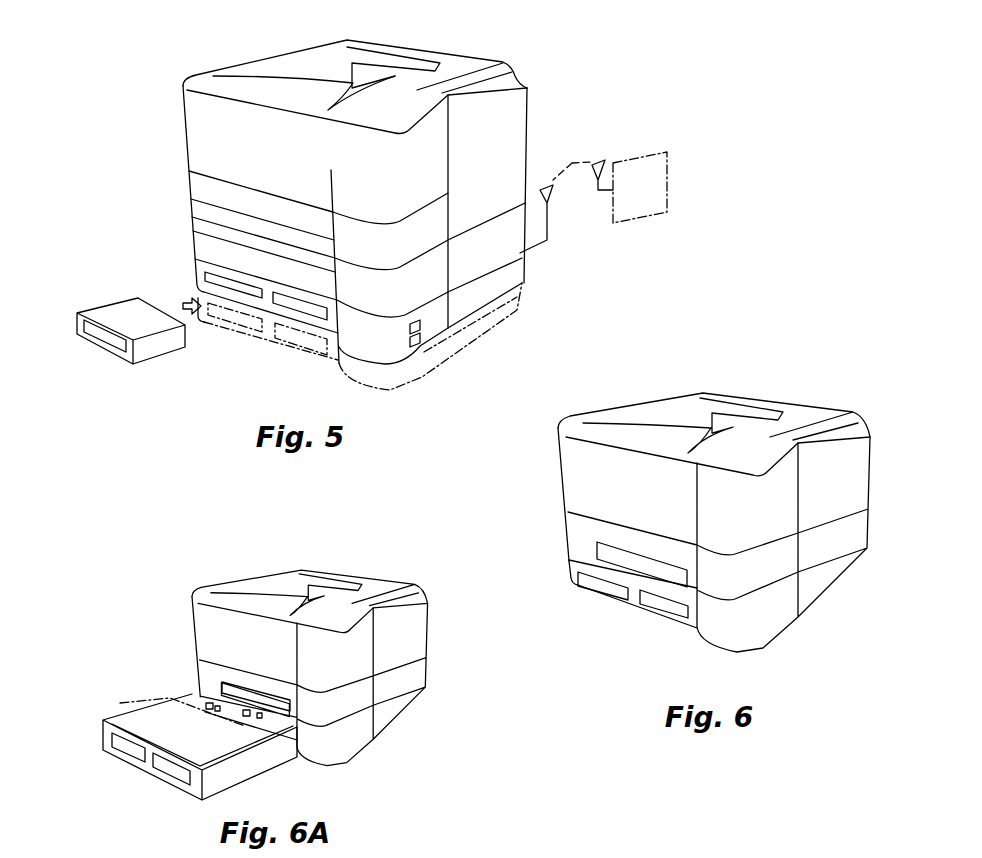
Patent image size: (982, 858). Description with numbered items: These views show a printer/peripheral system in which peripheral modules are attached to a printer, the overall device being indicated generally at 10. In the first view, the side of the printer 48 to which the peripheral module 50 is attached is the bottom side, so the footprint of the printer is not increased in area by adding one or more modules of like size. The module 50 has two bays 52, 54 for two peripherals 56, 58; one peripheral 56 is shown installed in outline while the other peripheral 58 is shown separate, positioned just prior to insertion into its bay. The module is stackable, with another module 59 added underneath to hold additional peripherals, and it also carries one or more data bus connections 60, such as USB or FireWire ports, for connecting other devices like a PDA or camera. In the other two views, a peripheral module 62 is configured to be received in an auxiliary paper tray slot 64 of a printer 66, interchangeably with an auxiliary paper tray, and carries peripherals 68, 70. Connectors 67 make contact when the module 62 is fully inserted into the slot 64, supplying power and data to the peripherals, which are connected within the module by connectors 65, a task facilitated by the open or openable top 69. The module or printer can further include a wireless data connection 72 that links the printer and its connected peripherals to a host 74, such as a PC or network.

In FIG. 5, the image forming device (printer) 10 is at (140, 93).
In FIG. 6, the image forming device (printer) 10 is at (538, 470).
In FIG. 5, the printer 48 is at (440, 76).
In FIG. 5, the peripheral module 50 is at (530, 270).
In FIG. 5, the bay 52 is at (239, 297).
In FIG. 5, the bay 54 is at (304, 320).
In FIG. 5, the peripheral 56 is at (288, 307).
In FIG. 5, the peripheral 58 is at (207, 273).
In FIG. 5, the module 59 is at (507, 315).
In FIG. 5, the data bus connections 60 is at (426, 350).
In FIG. 6, the peripheral module 62 is at (560, 578).
In FIG. 6A, the peripheral module 62 is at (98, 737).
In FIG. 6, the auxiliary paper tray slot 64 is at (575, 559).
In FIG. 6A, the auxiliary paper tray slot 64 is at (203, 692).
In FIG. 6A, the connectors 65 is at (213, 706).
In FIG. 6, the printer 66 is at (670, 393).
In FIG. 6A, the printer 66 is at (267, 563).
In FIG. 6A, the connectors 67 is at (225, 705).
In FIG. 6, the peripheral 68 is at (600, 586).
In FIG. 6A, the peripheral 68 is at (135, 730).
In FIG. 6A, the openable top 69 is at (172, 697).
In FIG. 6, the peripheral 70 is at (662, 603).
In FIG. 6A, the peripheral 70 is at (229, 776).
In FIG. 5, the wireless data connection 72 is at (572, 163).
In FIG. 5, the host 74 is at (667, 188).